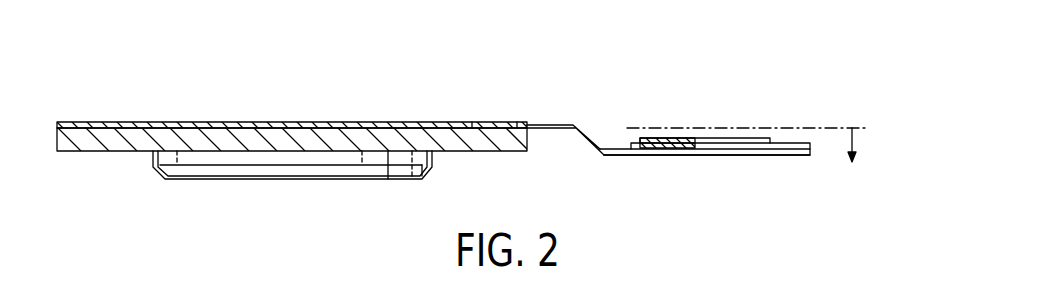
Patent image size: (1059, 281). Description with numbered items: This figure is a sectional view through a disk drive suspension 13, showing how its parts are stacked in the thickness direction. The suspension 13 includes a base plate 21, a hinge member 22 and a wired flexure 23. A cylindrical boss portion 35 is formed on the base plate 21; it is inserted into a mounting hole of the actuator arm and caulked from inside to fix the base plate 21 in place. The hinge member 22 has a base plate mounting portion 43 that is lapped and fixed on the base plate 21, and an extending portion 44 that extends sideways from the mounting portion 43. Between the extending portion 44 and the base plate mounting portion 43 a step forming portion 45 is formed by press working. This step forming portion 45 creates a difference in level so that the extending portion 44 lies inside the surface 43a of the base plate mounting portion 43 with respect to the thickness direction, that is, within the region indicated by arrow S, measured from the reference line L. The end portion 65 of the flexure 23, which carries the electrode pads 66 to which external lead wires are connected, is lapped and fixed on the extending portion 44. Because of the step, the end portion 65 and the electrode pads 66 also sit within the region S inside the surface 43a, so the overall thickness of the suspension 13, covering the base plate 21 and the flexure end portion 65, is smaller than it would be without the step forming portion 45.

The suspension 13 is at (217, 88).
The base plate 21 is at (508, 152).
The hinge member 22 is at (427, 124).
The wired flexure 23 is at (676, 137).
The boss portion 35 is at (237, 181).
The base plate mounting portion 43 is at (298, 123).
The surface of the base plate mounting portion 43a is at (495, 123).
The extending portion 44 is at (642, 156).
The step forming portion 45 is at (591, 127).
The end portion of the flexure 65 is at (790, 144).
The electrode pads 66 is at (742, 138).
The reference line L is at (653, 118).
The arrow S / region S is at (861, 145).